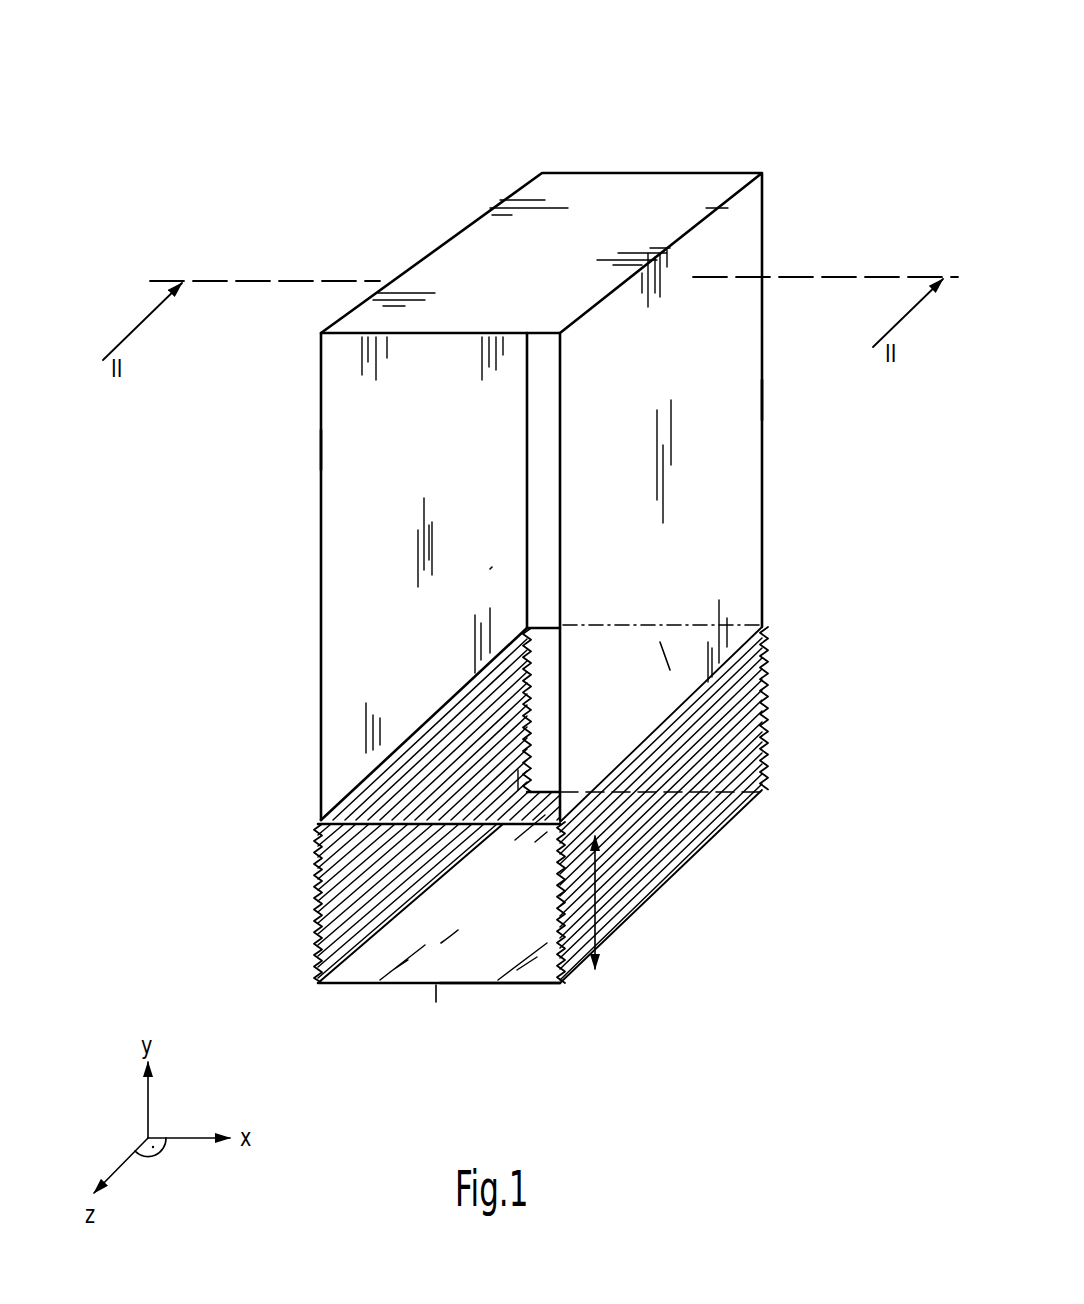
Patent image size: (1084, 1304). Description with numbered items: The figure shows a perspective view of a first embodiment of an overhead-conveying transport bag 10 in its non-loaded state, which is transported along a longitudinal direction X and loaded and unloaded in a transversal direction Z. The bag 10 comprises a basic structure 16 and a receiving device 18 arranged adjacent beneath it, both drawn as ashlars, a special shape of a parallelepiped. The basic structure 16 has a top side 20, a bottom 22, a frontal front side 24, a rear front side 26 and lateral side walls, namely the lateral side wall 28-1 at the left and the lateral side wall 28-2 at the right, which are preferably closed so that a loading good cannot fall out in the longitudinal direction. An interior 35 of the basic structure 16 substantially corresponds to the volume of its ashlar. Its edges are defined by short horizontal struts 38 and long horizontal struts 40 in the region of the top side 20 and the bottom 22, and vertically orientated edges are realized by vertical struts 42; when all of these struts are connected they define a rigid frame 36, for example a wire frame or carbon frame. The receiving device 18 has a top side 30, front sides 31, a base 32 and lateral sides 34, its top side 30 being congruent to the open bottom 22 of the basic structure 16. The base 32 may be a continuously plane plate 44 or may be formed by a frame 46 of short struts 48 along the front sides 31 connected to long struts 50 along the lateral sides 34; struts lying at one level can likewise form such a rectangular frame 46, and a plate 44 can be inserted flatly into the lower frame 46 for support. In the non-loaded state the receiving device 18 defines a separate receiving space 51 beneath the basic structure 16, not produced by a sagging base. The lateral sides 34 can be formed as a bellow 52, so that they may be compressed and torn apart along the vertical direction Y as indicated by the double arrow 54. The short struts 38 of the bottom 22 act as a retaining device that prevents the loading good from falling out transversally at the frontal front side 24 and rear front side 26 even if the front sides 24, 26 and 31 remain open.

The overhead-conveying transport bag 10 is at (292, 230).
The basic structure 16 is at (242, 567).
The receiving device 18 is at (282, 892).
The top side 20 is at (612, 201).
The bottom 22 is at (670, 673).
The frontal front side 24 is at (412, 455).
The rear front side 26 is at (718, 277).
The lateral side wall 28-1 is at (357, 749).
The lateral side wall 28-2 is at (785, 398).
The top side 30 is at (663, 670).
The front sides 31 is at (632, 652).
The base 32 is at (435, 985).
The lateral sides 34 is at (772, 731).
The interior 35 is at (492, 567).
The frame 36 is at (457, 228).
The short horizontal struts 38 is at (694, 172).
The long horizontal struts 40 is at (507, 195).
The vertical struts 42 is at (764, 462).
The plate 44 is at (503, 996).
The frame 46 is at (726, 212).
The short struts 48 is at (540, 788).
The long struts 50 is at (387, 918).
The receiving space 51 is at (477, 780).
The bellow 52 is at (715, 773).
The double arrow 54 is at (597, 917).